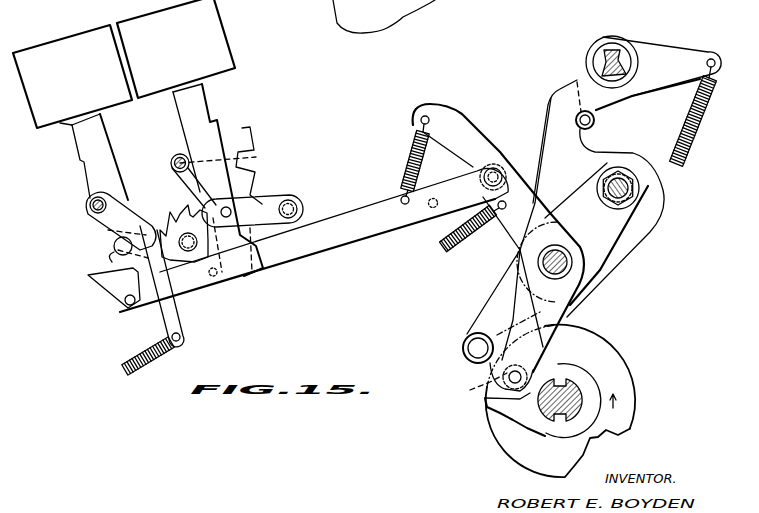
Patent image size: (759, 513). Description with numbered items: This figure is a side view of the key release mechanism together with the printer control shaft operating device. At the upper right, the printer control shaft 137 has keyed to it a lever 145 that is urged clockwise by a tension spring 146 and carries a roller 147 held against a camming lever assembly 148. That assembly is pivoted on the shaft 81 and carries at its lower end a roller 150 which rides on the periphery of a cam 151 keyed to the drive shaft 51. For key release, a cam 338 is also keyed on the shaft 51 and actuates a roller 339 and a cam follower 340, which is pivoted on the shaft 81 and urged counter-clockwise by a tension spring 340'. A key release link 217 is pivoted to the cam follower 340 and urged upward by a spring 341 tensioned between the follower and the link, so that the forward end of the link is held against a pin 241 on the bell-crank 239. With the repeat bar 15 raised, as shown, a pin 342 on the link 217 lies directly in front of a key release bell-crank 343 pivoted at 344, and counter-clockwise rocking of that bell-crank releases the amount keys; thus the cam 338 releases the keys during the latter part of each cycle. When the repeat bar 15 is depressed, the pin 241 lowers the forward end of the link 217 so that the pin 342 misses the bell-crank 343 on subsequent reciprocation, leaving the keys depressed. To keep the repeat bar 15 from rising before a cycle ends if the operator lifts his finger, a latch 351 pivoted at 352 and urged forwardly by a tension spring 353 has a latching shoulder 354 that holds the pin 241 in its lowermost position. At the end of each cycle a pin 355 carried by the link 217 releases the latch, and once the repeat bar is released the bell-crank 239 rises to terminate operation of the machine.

The repeat bar 15 is at (62, 50).
The pivot 344 is at (173, 155).
The key release bell-crank 343 is at (258, 266).
The pin 342 is at (211, 278).
The bell-crank 239 is at (166, 228).
The pivot 352 is at (92, 210).
The pin 241 is at (114, 250).
The latching shoulder 354 is at (92, 290).
The pin 355 is at (136, 316).
The latch 351 is at (178, 322).
The tension spring 353 is at (148, 358).
The key release link 217 is at (378, 226).
The spring 341 is at (412, 165).
The cam follower 340 is at (510, 235).
The tension spring 340' is at (473, 237).
The shaft 81 is at (568, 252).
The camming lever assembly 148 is at (620, 246).
The printer control shaft 137 is at (617, 42).
The lever 145 is at (674, 52).
The tension spring 146 is at (698, 130).
The roller 147 is at (594, 122).
The roller 150 is at (464, 345).
The roller 339 is at (500, 383).
The cam 338 is at (485, 402).
The cam 151 is at (493, 428).
The drive shaft 51 is at (585, 392).